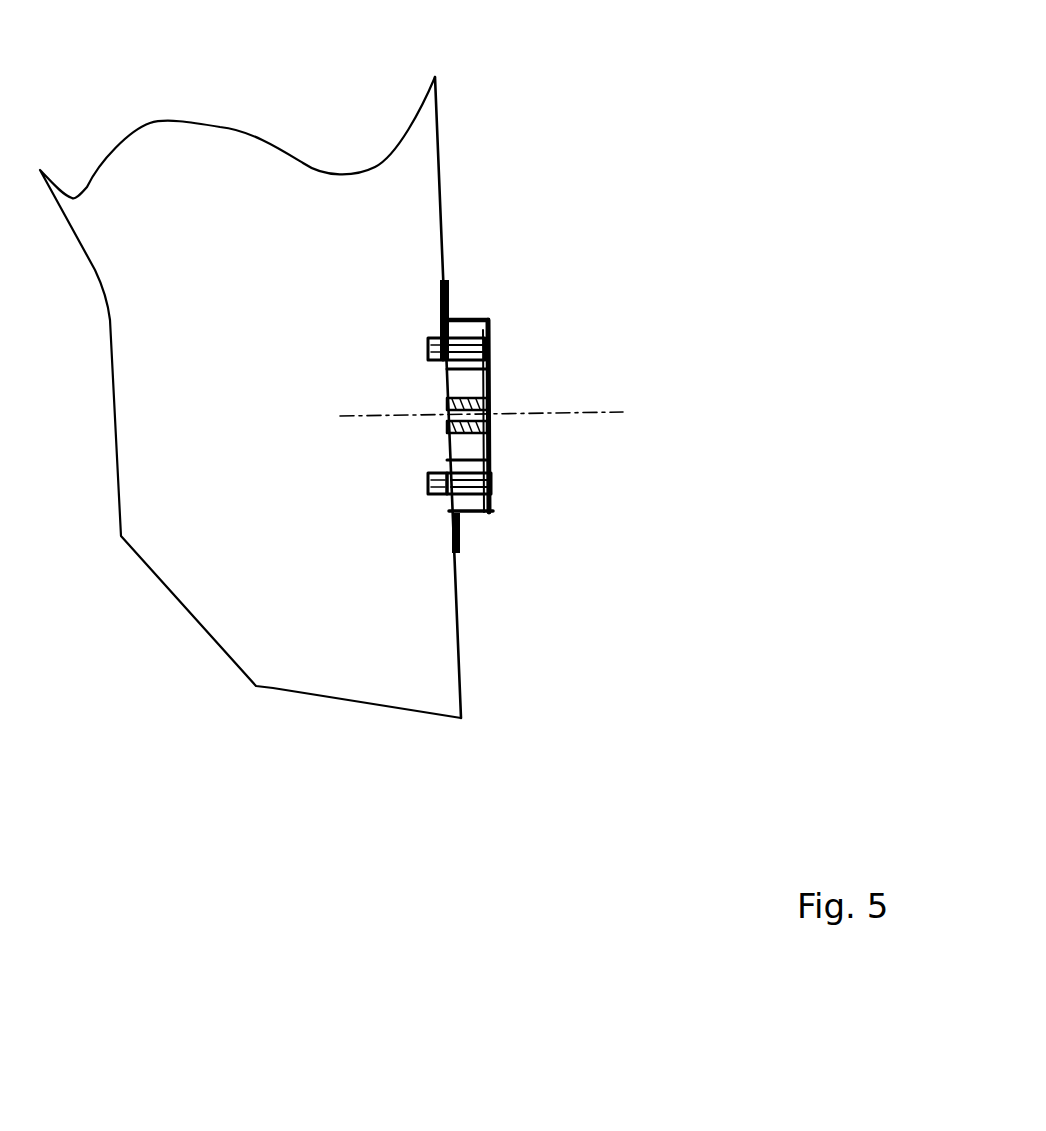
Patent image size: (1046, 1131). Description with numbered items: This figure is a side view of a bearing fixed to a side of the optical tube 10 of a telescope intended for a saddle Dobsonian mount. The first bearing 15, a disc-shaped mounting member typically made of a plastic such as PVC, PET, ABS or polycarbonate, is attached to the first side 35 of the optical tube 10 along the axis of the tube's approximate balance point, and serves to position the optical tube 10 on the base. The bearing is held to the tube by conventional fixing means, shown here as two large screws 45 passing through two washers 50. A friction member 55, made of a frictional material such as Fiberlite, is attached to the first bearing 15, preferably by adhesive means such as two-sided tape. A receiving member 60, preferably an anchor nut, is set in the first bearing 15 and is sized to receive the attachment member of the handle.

The optical tube 10 is at (295, 198).
The first side 35 is at (440, 220).
The first bearing 15 is at (487, 317).
The large screws 45 is at (483, 348).
The washers 50 is at (428, 350).
The friction member 55 is at (493, 392).
The receiving member 60 is at (445, 426).